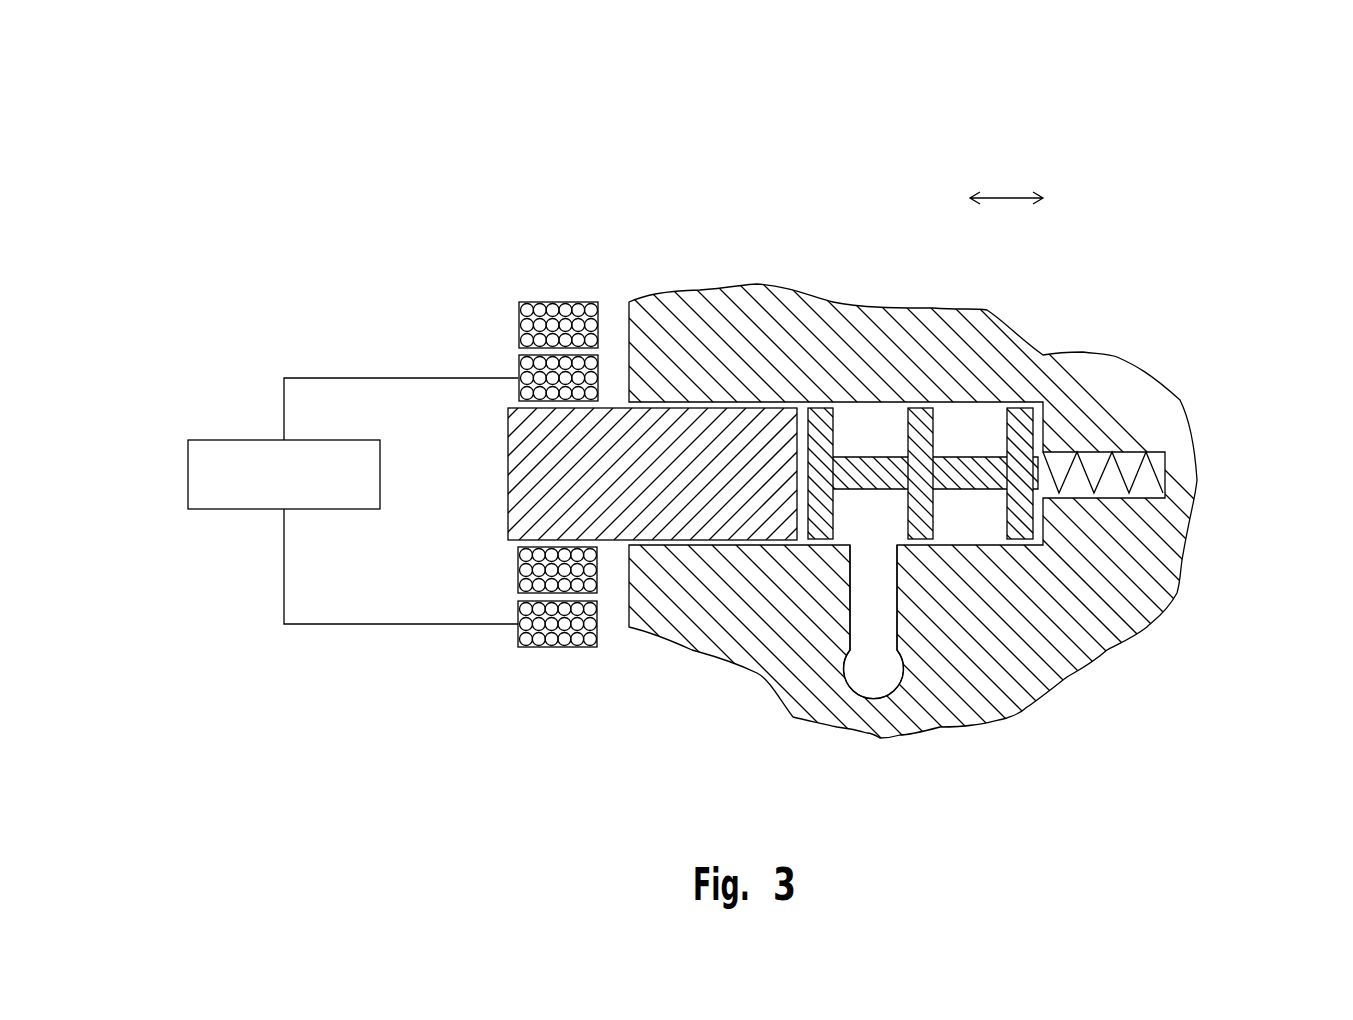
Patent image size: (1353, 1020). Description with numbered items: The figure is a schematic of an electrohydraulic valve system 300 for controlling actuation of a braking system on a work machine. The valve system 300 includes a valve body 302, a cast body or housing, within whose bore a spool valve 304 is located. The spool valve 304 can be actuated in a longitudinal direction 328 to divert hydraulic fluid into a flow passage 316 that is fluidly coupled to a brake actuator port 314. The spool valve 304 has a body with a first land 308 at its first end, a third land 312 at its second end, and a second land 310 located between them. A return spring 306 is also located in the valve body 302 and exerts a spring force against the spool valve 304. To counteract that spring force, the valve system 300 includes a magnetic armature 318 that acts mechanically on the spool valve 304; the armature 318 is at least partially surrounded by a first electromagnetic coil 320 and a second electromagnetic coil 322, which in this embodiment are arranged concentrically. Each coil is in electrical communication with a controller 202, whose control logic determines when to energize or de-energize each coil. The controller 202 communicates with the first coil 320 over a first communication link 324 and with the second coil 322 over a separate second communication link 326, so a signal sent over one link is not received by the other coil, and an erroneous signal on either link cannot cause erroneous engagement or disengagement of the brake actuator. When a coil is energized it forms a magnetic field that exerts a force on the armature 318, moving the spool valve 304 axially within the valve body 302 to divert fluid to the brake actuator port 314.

The electrohydraulic valve system 300 is at (294, 152).
The controller 202 is at (238, 438).
The valve body 302 is at (630, 604).
The spool valve 304 is at (970, 457).
The return spring 306 is at (1157, 475).
The first land 308 is at (822, 408).
The second land 310 is at (920, 408).
The third land 312 is at (1033, 430).
The brake actuator port 314 is at (877, 699).
The flow passage 316 is at (1012, 715).
The armature 318 is at (672, 408).
The first electromagnetic coil 320 is at (518, 570).
The second electromagnetic coil 322 is at (558, 302).
The first communication link 324 is at (402, 377).
The second communication link 326 is at (402, 624).
The longitudinal direction 328 is at (1007, 198).